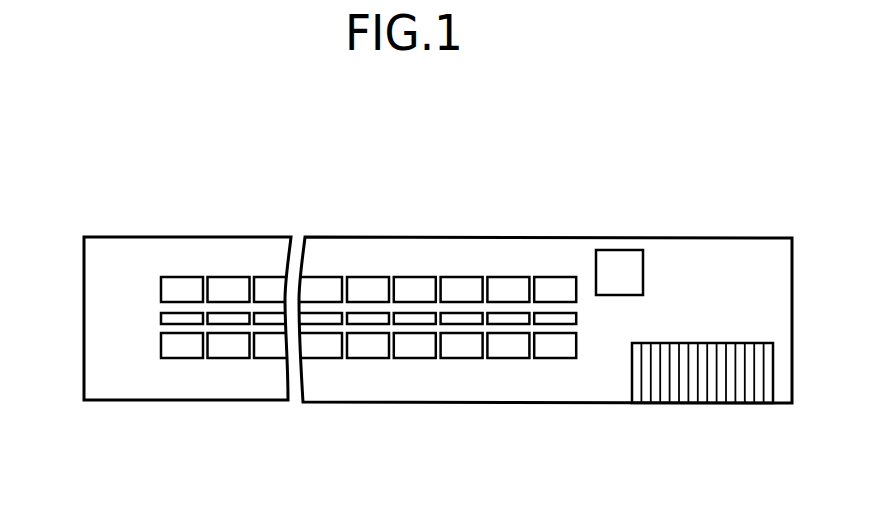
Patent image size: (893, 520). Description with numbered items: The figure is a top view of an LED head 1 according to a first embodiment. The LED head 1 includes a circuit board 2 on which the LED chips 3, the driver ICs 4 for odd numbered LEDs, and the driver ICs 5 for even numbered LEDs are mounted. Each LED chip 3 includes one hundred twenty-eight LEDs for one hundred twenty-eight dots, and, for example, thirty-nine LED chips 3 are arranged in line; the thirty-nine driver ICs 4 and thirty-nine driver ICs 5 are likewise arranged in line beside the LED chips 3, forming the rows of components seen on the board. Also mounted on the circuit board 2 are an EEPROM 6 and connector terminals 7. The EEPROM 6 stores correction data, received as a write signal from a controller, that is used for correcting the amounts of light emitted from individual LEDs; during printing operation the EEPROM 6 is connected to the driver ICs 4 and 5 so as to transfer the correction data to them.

The LED head 1 is at (751, 232).
The circuit board 2 is at (415, 237).
The LED chips 3 is at (161, 320).
The driver ICs for odd numbered LEDs 4 is at (178, 277).
The driver ICs for even numbered LEDs 5 is at (180, 357).
The EEPROM 6 is at (622, 258).
The connector terminals 7 is at (757, 403).